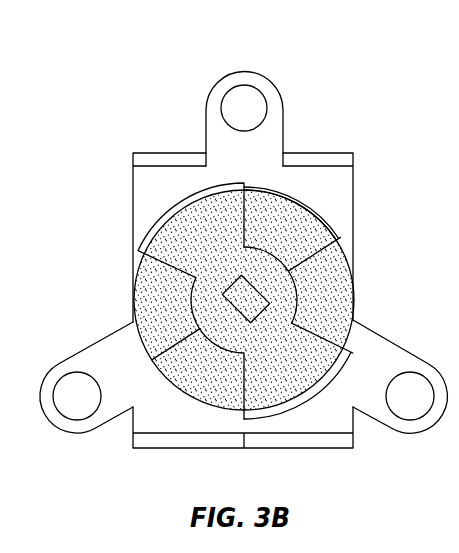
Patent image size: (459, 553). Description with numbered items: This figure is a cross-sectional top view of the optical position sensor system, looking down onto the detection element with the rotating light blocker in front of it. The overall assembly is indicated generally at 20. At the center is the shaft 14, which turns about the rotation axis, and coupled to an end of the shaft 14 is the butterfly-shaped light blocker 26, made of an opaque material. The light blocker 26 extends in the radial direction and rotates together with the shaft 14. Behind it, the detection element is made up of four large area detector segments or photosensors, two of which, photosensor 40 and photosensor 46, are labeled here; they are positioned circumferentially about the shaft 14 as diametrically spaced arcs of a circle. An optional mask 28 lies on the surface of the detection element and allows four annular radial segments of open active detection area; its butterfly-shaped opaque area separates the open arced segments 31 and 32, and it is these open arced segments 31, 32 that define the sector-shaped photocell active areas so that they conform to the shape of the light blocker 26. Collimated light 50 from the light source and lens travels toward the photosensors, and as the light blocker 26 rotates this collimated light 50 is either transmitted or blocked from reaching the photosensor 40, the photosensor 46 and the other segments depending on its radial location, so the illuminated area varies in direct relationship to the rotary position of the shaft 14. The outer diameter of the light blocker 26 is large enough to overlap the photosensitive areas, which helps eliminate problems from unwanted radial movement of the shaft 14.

The clamp assembly 20 is at (235, 263).
The shaft 14 is at (247, 298).
The light blocker 26 is at (302, 400).
The mask 28 is at (342, 202).
The open arced segment 31 is at (333, 227).
The open arced segment 32 is at (170, 388).
The photosensor 40 is at (210, 392).
The photosensor 46 is at (334, 200).
The collimated light 50 is at (147, 283).